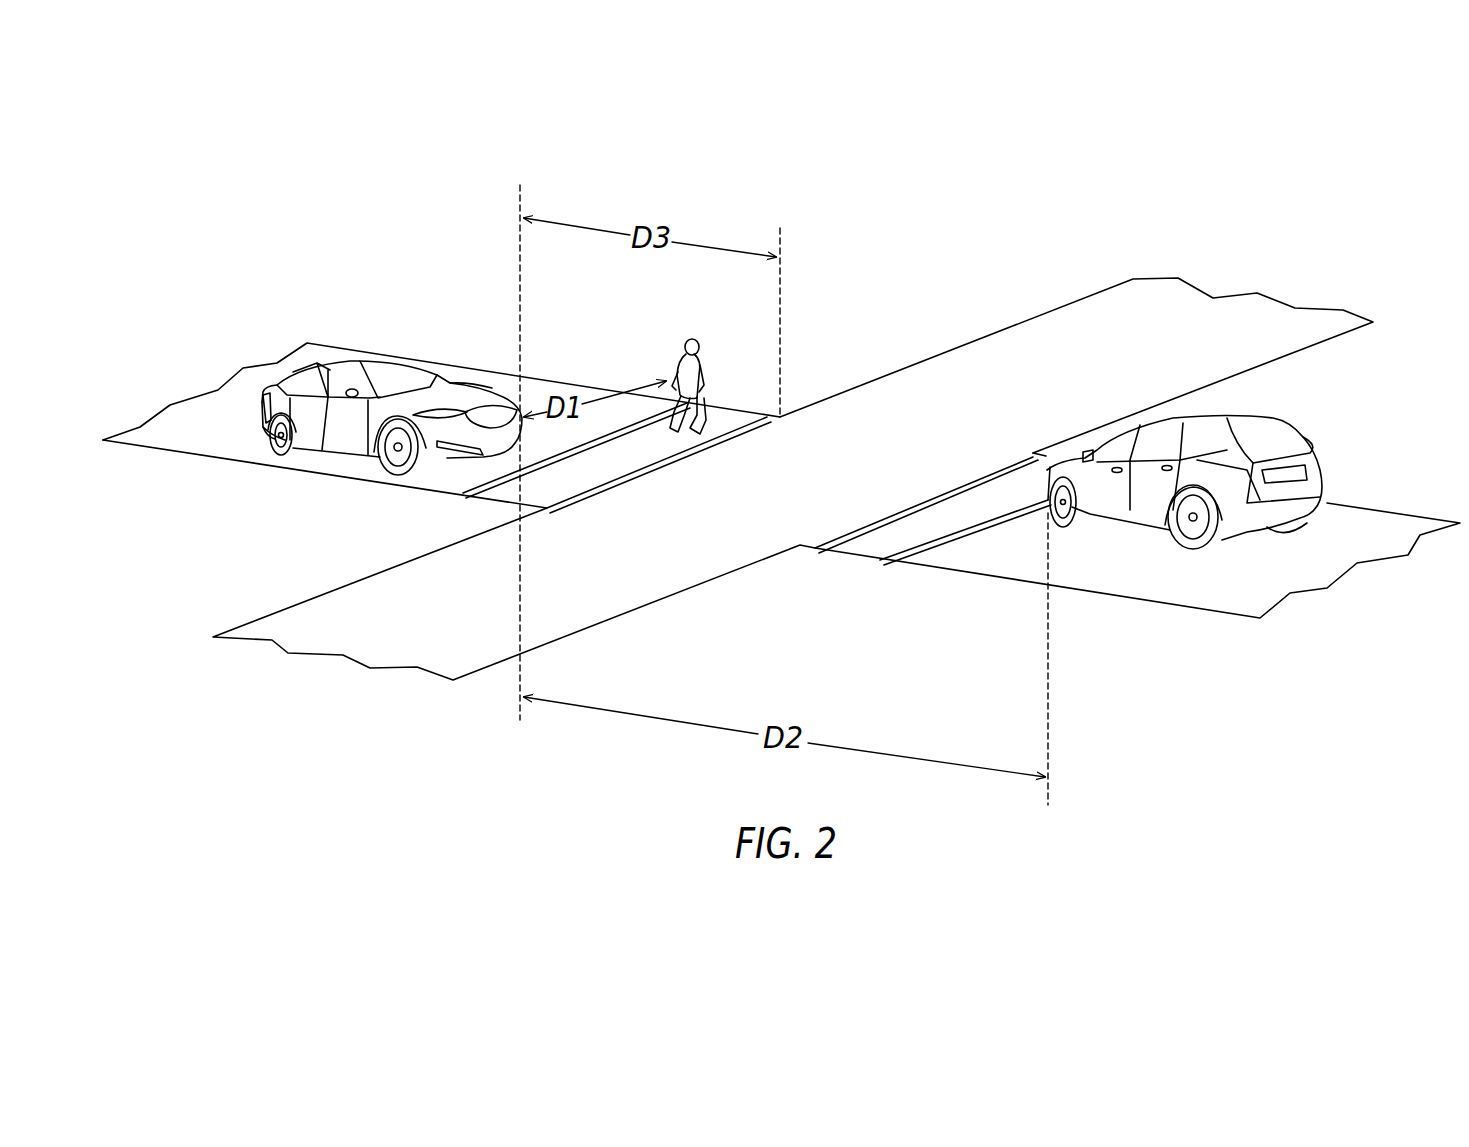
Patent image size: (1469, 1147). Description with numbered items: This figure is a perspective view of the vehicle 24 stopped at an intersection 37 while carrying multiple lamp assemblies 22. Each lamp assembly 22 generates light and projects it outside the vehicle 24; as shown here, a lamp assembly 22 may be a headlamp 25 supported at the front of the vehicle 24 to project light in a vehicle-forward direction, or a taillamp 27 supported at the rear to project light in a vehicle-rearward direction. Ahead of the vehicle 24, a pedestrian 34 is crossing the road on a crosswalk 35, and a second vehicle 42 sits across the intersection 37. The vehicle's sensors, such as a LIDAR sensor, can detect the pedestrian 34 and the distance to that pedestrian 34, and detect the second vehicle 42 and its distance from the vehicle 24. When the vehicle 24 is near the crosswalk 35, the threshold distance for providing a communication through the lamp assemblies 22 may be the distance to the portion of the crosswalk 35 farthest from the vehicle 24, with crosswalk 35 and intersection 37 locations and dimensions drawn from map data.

The lamp assembly 22 is at (262, 398).
The vehicle 24 is at (350, 360).
The headlamp 25 is at (457, 412).
The taillamp 27 is at (263, 432).
The pedestrian 34 is at (703, 354).
The crosswalk 35 is at (570, 473).
The intersection 37 is at (790, 447).
The second vehicle 42 is at (1303, 437).